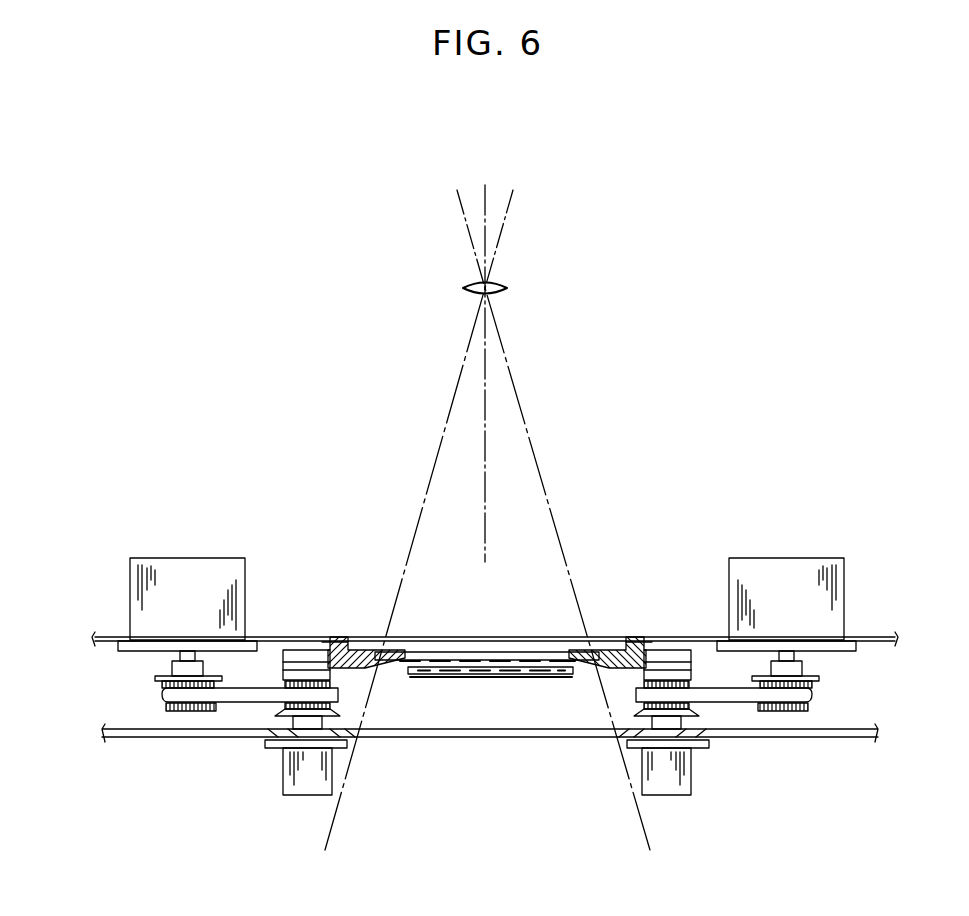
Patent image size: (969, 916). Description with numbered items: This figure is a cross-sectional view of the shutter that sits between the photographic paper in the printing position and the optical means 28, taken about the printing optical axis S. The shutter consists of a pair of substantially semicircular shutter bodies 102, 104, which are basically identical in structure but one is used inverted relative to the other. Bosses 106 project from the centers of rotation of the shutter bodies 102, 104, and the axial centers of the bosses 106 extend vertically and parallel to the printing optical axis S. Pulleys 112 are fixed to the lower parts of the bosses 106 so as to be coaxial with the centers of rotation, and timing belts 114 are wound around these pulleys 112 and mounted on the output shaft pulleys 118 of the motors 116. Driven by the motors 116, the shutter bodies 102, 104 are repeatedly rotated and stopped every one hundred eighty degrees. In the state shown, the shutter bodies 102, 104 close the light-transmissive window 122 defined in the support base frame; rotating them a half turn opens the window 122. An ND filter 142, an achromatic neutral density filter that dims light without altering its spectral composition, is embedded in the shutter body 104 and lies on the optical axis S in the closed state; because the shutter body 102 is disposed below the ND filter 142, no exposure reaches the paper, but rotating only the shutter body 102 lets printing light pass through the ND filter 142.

The optical means 28 is at (497, 283).
The printing optical axis S is at (487, 522).
The shutter body 102 is at (500, 672).
The shutter body 104 is at (430, 655).
The boss 106 is at (292, 655).
The pulley 112 is at (275, 683).
The timing belt 114 is at (232, 693).
The motor 116 is at (145, 600).
The output shaft pulley 118 is at (175, 713).
The light-transmissive window 122 is at (355, 740).
The ND filter 142 is at (490, 668).